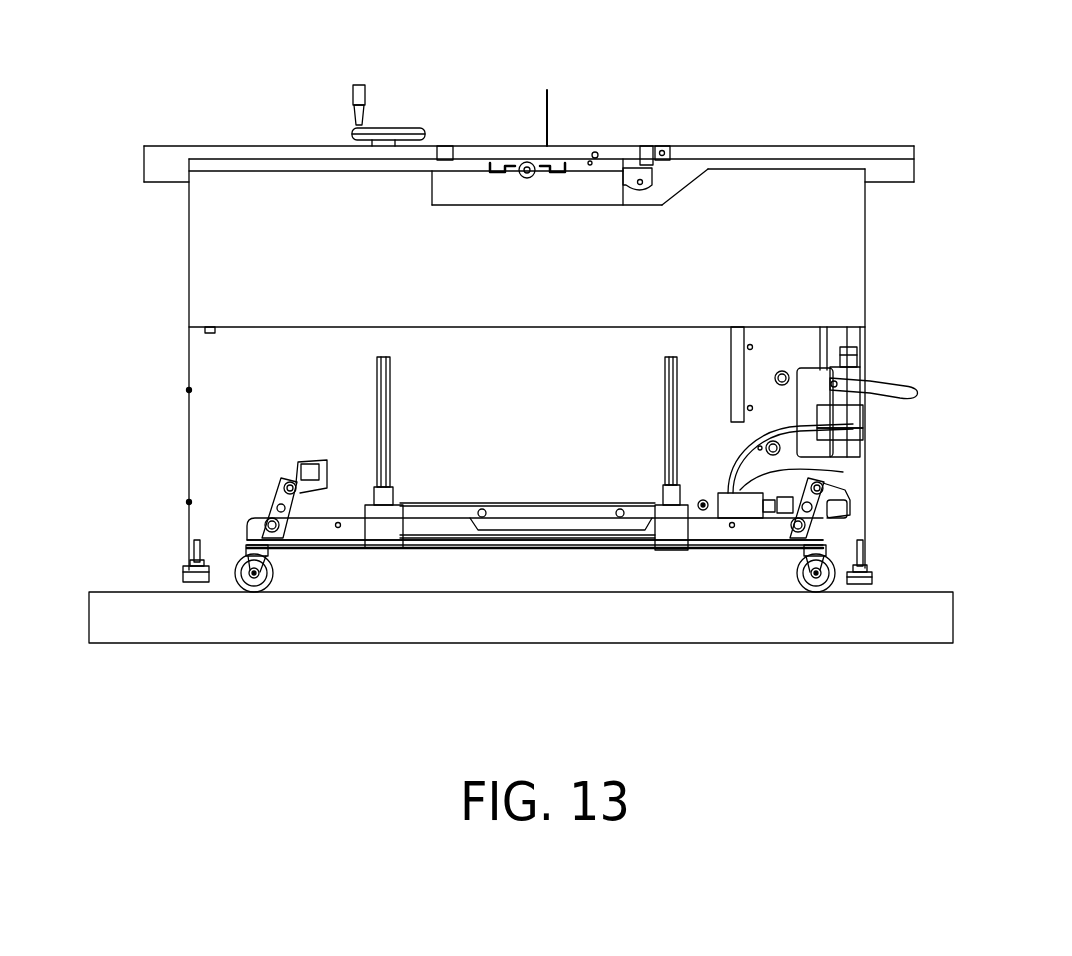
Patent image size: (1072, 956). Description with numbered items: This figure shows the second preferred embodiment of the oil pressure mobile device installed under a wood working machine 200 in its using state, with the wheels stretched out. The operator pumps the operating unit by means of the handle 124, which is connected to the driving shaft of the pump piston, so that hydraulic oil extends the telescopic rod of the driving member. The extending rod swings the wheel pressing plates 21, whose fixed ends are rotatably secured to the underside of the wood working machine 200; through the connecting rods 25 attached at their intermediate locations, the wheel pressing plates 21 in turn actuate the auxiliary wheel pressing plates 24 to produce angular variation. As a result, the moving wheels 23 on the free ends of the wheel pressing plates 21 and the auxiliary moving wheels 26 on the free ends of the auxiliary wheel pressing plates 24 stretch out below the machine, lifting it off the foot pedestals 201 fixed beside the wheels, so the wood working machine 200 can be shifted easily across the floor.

The wood working machine 200 is at (790, 148).
The handle 124 is at (917, 391).
The foot pedestal 201 is at (187, 573).
The wheel pressing plate 21 is at (823, 500).
The auxiliary wheel pressing plate 24 is at (300, 490).
The connecting rod 25 is at (540, 548).
The auxiliary moving wheel 26 is at (257, 592).
The moving wheel 23 is at (814, 594).